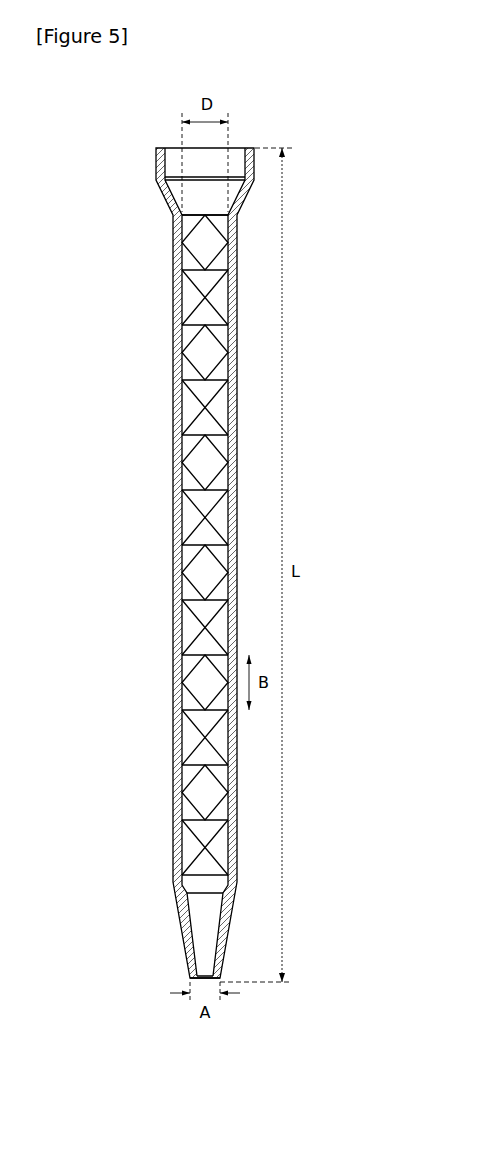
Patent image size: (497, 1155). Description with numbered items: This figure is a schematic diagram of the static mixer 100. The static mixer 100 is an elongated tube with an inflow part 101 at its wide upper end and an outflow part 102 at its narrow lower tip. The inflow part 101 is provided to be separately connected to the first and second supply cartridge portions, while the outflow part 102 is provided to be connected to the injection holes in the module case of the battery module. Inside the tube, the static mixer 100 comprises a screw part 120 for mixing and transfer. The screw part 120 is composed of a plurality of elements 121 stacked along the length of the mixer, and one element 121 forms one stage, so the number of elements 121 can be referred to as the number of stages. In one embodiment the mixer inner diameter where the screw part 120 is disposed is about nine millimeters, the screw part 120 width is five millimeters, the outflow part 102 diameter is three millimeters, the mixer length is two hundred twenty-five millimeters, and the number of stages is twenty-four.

The static mixer 100 is at (279, 127).
The inflow part 101 is at (142, 187).
The outflow part 102 is at (177, 984).
The screw part 120 is at (240, 545).
The element 121 is at (174, 652).